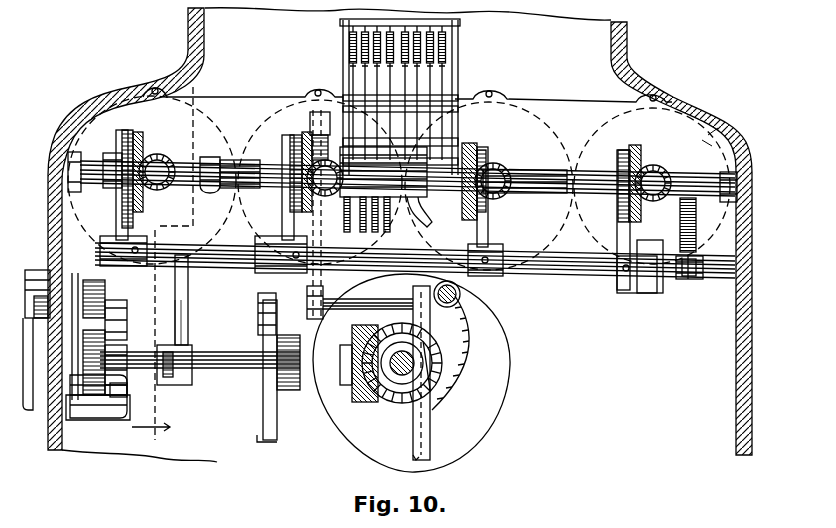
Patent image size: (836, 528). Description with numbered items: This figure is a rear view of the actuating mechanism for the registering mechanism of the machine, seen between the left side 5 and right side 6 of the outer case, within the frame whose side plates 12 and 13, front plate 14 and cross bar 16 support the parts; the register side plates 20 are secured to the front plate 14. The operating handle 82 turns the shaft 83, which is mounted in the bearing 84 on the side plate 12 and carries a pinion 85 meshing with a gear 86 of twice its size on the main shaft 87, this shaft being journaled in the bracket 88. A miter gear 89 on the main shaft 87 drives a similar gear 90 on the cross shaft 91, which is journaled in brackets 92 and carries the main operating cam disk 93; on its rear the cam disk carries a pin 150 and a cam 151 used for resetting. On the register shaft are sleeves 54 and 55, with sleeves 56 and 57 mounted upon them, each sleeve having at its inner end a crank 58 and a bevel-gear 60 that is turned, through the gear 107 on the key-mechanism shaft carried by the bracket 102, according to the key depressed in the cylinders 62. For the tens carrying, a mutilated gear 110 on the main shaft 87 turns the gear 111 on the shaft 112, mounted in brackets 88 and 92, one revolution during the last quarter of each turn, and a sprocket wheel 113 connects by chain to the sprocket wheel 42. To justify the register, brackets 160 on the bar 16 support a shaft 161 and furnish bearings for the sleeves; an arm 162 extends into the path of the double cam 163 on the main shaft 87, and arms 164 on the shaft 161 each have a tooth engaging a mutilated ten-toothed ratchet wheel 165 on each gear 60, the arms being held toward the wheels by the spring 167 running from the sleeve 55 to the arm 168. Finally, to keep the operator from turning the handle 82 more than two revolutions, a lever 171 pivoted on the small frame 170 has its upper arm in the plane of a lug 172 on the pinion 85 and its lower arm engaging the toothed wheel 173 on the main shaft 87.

The left side 5 is at (715, 98).
The right side 6 is at (150, 70).
The side plate 12 is at (200, 49).
The side plate 13 is at (616, 62).
The front plate 14 is at (338, 248).
The cross bar 16 is at (368, 232).
The side plates 20 is at (348, 67).
The sprocket wheel 42 is at (319, 207).
The sleeve 54 is at (186, 162).
The sleeve 55 is at (621, 178).
The sleeve 56 is at (238, 158).
The sleeve 57 is at (538, 180).
The crank 58 is at (399, 183).
The bevel-gear 60 is at (139, 143).
The cylinder 62 is at (728, 126).
The operating handle 82 is at (27, 411).
The shaft 83 is at (26, 273).
The bearing 84 is at (78, 273).
The pinion 85 is at (120, 320).
The gear 86 is at (93, 419).
The main shaft 87 is at (217, 369).
The bracket 88 is at (262, 433).
The miter gear 89 is at (361, 396).
The gear 90 is at (398, 375).
The cross shaft 91 is at (395, 385).
The brackets 92 is at (426, 430).
The main operating cam disk 93 is at (411, 373).
The bracket 102 is at (681, 221).
The gear 107 is at (162, 160).
The mutilated gear 110 is at (287, 392).
The gear 111 is at (258, 329).
The shaft 112 is at (383, 303).
The sprocket wheel 113 is at (322, 294).
The pin 150 is at (460, 294).
The cam 151 is at (461, 339).
The brackets 160 is at (68, 221).
The shaft 161 is at (565, 270).
The arm 162 is at (188, 291).
The double cam 163 is at (164, 386).
The arms 164 is at (130, 220).
The mutilated ten-toothed ratchet wheel 165 is at (135, 120).
The spring 167 is at (698, 234).
The arm 168 is at (689, 277).
The small frame 170 is at (73, 420).
The lever 171 is at (118, 398).
The lug 172 is at (118, 286).
The toothed wheel 173 is at (121, 343).